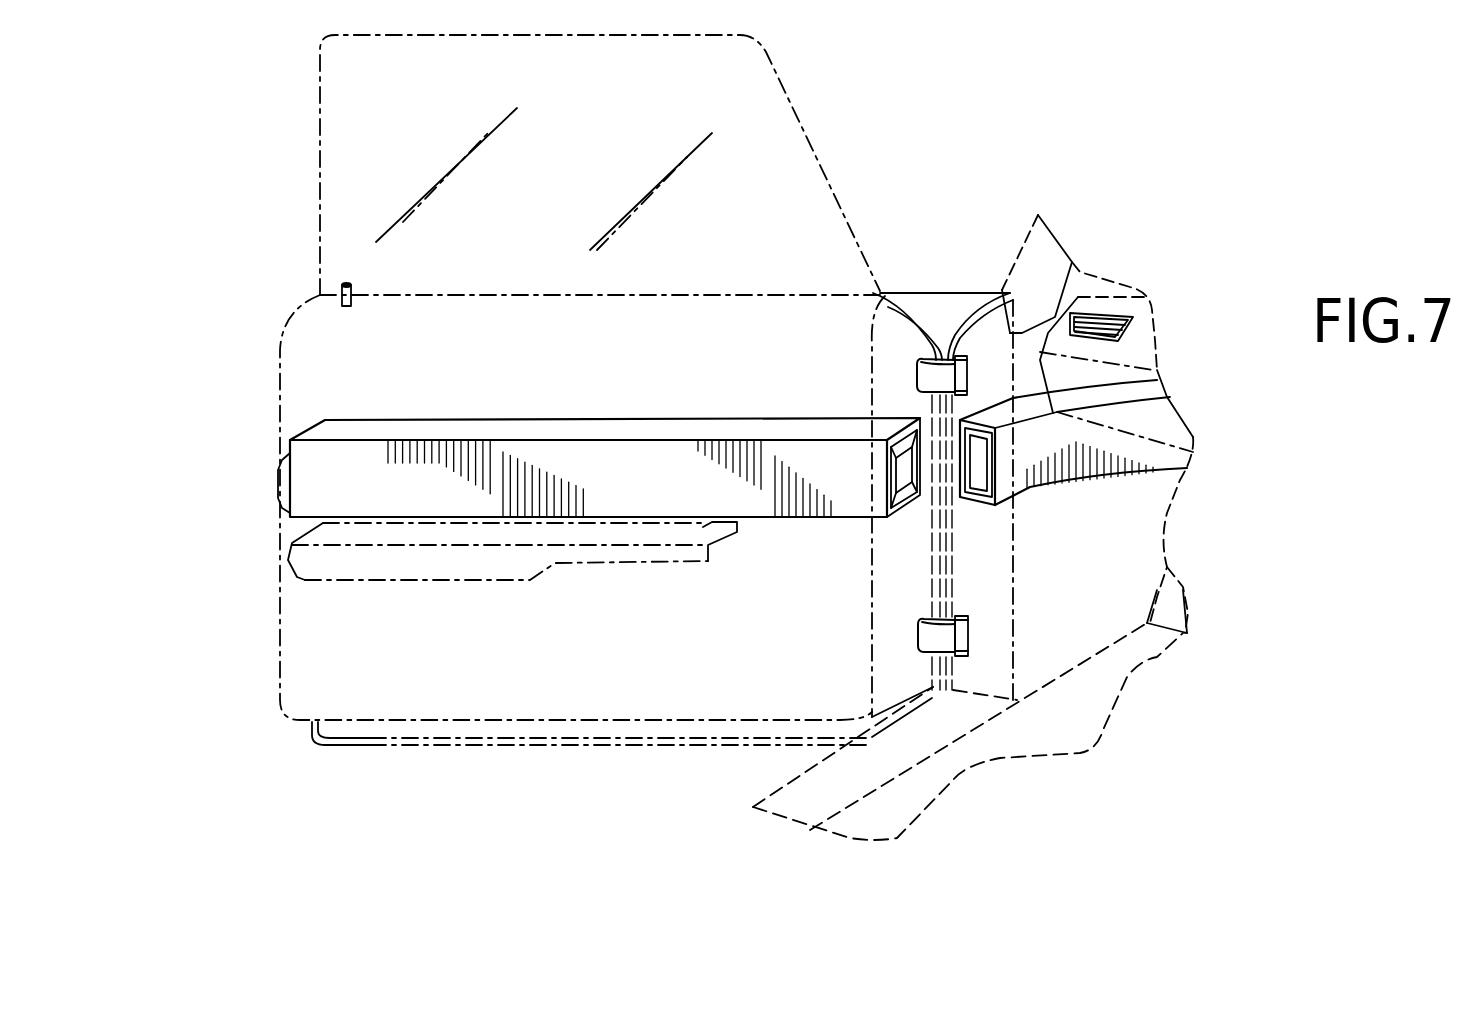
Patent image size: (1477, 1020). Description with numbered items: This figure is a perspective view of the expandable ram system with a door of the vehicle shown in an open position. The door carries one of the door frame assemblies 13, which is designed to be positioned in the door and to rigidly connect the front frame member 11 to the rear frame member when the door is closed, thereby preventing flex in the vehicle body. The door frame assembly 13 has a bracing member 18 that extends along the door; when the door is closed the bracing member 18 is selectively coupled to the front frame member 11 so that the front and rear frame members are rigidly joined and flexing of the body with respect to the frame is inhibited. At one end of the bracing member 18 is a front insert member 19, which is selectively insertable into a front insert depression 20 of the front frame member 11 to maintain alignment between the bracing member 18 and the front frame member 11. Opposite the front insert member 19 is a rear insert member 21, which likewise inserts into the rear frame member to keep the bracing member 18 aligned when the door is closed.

The front frame member 11 is at (1025, 413).
The door frame assembly 13 is at (572, 615).
The bracing member 18 is at (640, 427).
The front insert member 19 is at (928, 410).
The front insert depression 20 is at (982, 465).
The rear insert member 21 is at (280, 475).